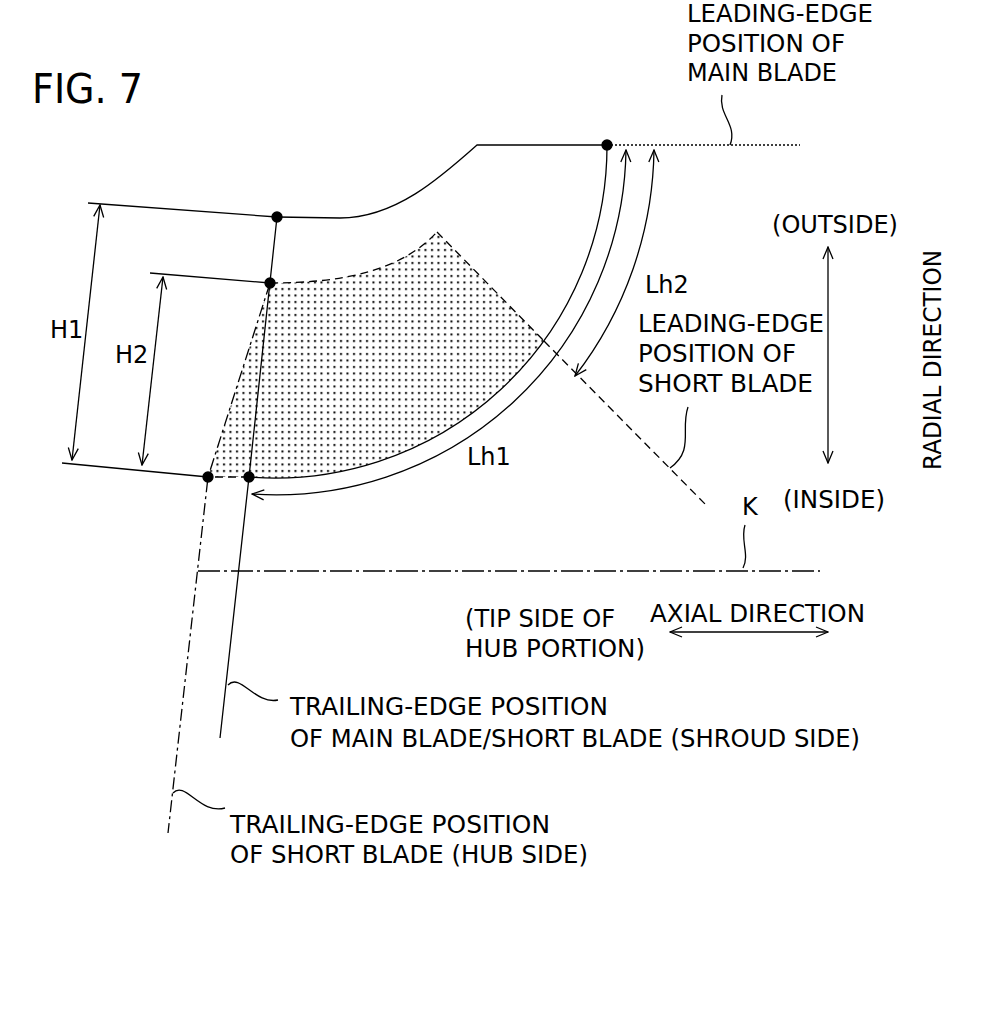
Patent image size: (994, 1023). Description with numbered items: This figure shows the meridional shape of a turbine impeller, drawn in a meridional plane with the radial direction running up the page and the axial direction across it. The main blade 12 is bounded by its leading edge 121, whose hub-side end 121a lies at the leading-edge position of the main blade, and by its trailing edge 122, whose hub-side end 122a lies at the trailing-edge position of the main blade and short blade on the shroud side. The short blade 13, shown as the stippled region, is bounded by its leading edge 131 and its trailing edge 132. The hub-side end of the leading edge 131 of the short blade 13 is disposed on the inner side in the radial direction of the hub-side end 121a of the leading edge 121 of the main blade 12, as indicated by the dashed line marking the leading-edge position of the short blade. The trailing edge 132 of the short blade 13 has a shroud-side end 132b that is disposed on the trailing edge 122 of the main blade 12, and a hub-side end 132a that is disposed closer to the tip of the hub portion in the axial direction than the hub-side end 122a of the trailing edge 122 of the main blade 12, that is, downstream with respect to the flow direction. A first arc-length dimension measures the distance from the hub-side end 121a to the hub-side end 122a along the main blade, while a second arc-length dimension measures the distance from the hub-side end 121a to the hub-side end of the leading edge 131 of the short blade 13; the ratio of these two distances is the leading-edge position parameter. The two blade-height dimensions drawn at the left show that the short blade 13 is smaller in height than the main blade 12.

The main blade 12 is at (413, 197).
The leading edge of the main blade 121 is at (538, 145).
The hub-side end of the leading edge of the main blade 121a is at (607, 143).
The trailing edge of the main blade 122 is at (276, 243).
The hub-side end of the trailing edge of the main blade 122a is at (252, 482).
The short blade 13 is at (353, 280).
The leading edge of the short blade 131 is at (493, 288).
The trailing edge of the short blade 132 is at (222, 435).
The hub-side end of the trailing edge of the short blade 132a is at (277, 215).
The shroud-side end of the trailing edge of the short blade 132b is at (270, 283).